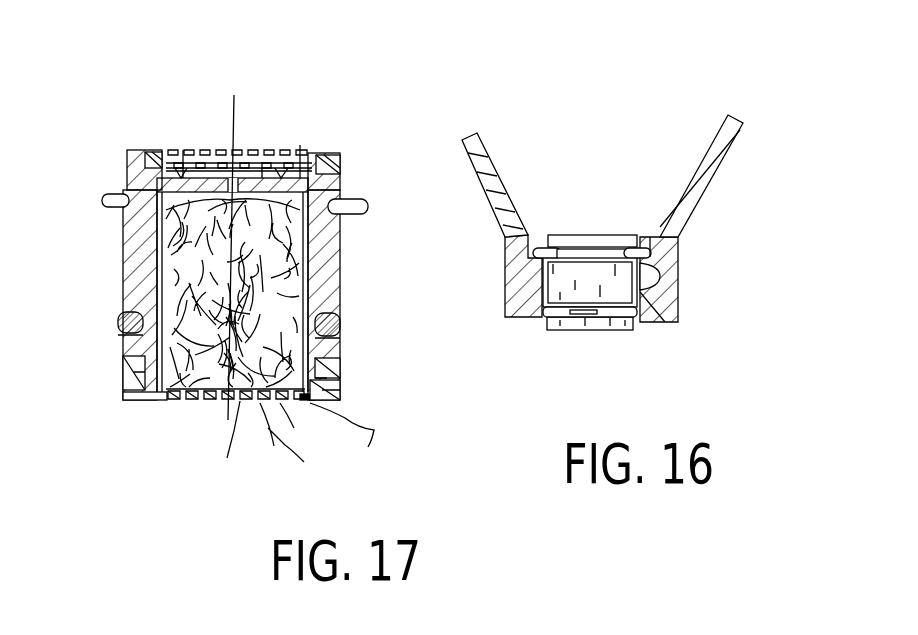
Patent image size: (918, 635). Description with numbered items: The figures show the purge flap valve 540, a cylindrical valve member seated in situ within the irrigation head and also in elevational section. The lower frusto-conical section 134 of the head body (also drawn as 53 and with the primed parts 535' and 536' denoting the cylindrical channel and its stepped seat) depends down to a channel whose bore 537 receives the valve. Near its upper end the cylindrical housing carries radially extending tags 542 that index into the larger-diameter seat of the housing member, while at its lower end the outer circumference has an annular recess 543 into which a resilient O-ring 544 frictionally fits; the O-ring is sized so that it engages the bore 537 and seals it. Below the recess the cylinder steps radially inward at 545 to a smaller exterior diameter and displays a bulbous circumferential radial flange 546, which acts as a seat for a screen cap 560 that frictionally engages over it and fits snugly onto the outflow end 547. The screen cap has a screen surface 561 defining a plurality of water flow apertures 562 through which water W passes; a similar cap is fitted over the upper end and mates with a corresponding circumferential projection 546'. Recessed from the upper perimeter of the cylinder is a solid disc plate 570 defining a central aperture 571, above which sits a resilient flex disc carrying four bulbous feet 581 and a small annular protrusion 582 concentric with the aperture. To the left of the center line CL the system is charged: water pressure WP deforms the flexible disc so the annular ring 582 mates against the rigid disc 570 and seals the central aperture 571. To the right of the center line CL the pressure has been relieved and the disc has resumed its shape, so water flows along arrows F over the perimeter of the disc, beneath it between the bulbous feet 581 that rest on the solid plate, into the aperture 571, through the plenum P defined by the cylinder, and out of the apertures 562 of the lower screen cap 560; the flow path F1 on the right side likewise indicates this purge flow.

In FIG. 17, the purge flap valve 540 is at (100, 308).
In FIG. 16, the purge flap valve 540 is at (590, 210).
In FIG. 17, the radially extending tags 542 is at (106, 206).
In FIG. 16, the radially extending tags 542 is at (540, 250).
In FIG. 17, the annular recess 543 is at (344, 316).
In FIG. 17, the resilient O-ring 544 is at (344, 338).
In FIG. 16, the resilient O-ring 544 is at (587, 318).
In FIG. 17, the radial step 545 is at (342, 365).
In FIG. 17, the bulbous circumferential radial flange 546 is at (374, 401).
In FIG. 17, the circumferential projection 546' is at (378, 158).
In FIG. 17, the outflow end 547 is at (364, 431).
In FIG. 17, the screen cap 560 is at (125, 161).
In FIG. 17, the screen surface 561 is at (192, 403).
In FIG. 17, the water flow apertures 562 is at (246, 401).
In FIG. 17, the solid disc plate 570 is at (142, 253).
In FIG. 17, the central aperture 571 is at (220, 164).
In FIG. 17, the bulbous feet 581 is at (292, 164).
In FIG. 17, the annular protrusion 582 is at (252, 164).
In FIG. 17, the center line CL is at (232, 95).
In FIG. 17, the water pressure WP is at (185, 150).
In FIG. 17, the water flow arrows F is at (306, 150).
In FIG. 17, the flow path F1 is at (336, 252).
In FIG. 17, the plenum P is at (233, 293).
In FIG. 17, the water W is at (274, 445).
In FIG. 16, the lower frusto-conical section 134 is at (692, 215).
In FIG. 16, the arm 53 is at (495, 185).
In FIG. 16, the pocket 536' is at (703, 287).
In FIG. 16, the block 535' is at (708, 291).
In FIG. 16, the bore 537 is at (668, 336).